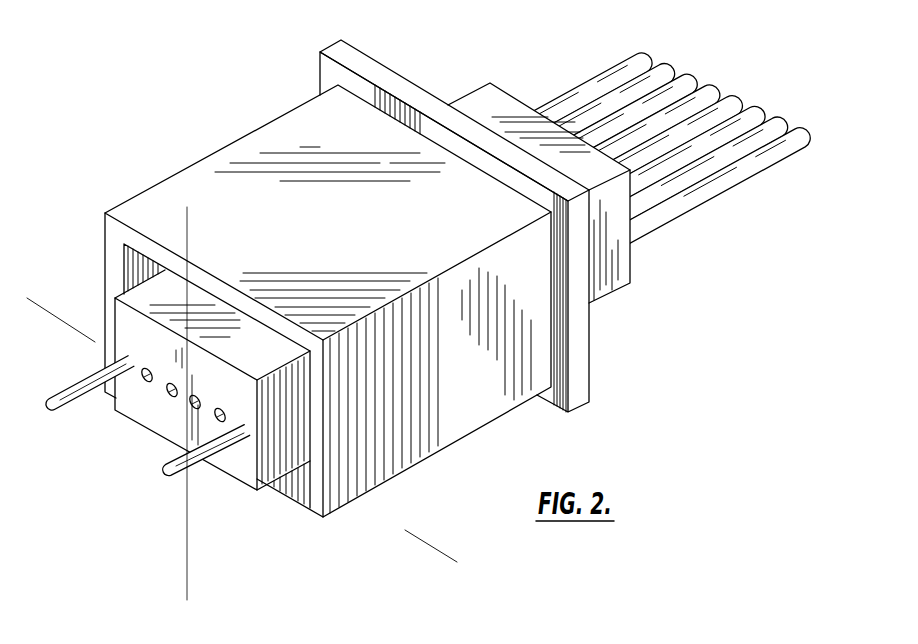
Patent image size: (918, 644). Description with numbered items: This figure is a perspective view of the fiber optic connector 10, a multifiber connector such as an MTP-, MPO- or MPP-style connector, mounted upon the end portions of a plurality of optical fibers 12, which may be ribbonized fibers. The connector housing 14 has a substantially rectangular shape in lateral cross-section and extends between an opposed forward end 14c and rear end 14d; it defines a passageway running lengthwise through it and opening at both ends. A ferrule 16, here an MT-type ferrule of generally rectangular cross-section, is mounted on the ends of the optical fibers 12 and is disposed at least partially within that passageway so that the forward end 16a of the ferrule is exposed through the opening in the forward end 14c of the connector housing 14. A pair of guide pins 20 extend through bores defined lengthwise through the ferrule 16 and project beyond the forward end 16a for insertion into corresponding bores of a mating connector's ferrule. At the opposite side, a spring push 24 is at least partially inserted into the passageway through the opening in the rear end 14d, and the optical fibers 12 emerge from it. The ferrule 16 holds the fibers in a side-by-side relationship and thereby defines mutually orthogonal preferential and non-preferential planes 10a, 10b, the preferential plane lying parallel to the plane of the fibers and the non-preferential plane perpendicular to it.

The fiber optic connector 10 is at (214, 115).
The preferential plane 10a is at (463, 558).
The non-preferential plane 10b is at (187, 240).
The optical fibers 12 is at (673, 200).
The connector housing 14 is at (473, 410).
The forward end 14c is at (313, 497).
The rear end 14d is at (589, 387).
The ferrule 16 is at (168, 384).
The forward end of the ferrule 16a is at (130, 322).
The guide pins 20 is at (85, 378).
The spring push 24 is at (615, 282).